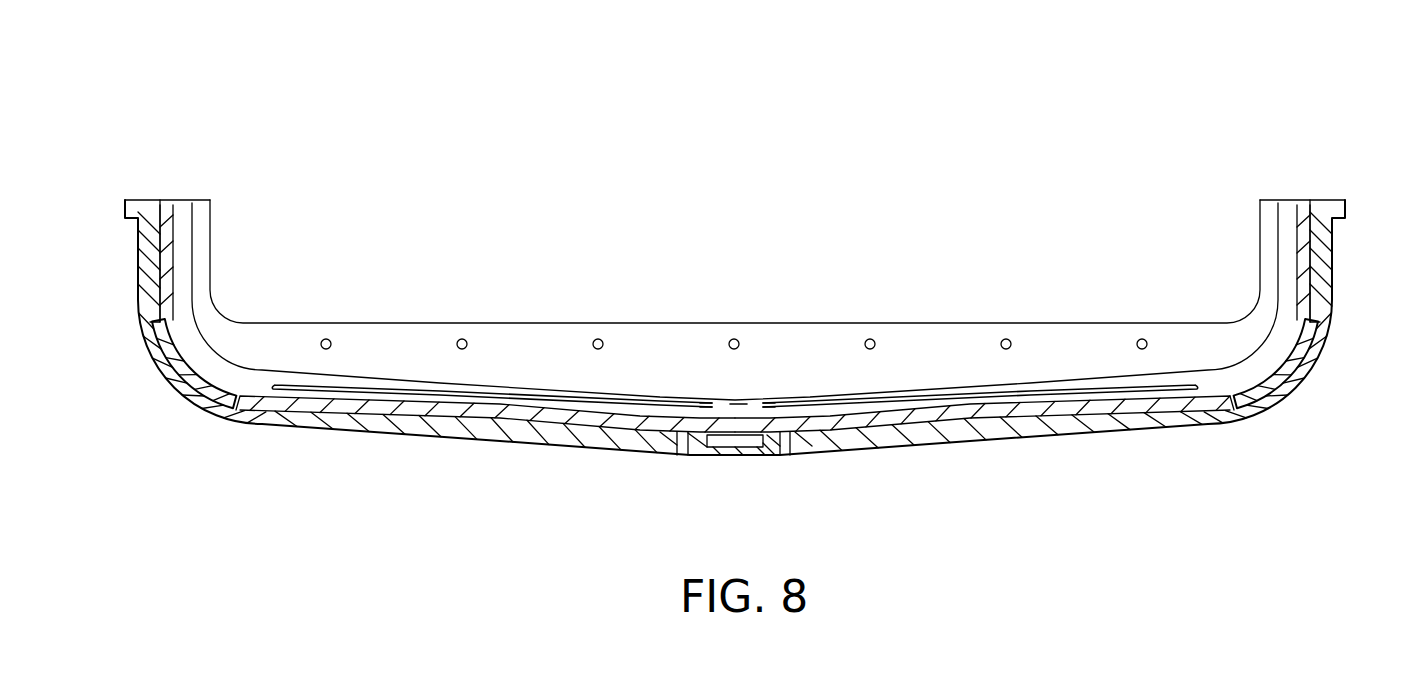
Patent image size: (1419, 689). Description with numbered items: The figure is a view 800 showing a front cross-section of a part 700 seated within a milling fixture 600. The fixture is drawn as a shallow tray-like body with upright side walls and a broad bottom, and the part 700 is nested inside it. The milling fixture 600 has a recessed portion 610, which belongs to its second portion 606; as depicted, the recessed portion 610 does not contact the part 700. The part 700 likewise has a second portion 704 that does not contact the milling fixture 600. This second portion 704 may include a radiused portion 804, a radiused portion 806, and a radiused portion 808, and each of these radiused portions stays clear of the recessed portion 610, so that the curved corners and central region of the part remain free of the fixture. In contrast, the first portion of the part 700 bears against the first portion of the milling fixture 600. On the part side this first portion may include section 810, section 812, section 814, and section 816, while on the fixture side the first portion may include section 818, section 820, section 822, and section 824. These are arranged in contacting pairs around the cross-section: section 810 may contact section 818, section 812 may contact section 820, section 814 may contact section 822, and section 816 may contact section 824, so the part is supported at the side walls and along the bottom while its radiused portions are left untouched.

The view 800 is at (304, 72).
The milling fixture 600 is at (132, 196).
The second portion 606 is at (712, 494).
The recessed portion 610 is at (1309, 374).
The part 700 is at (918, 402).
The second portion 704 is at (716, 407).
The radiused portion 804 is at (197, 354).
The radiused portion 806 is at (764, 407).
The radiused portion 808 is at (1272, 354).
The section 810 is at (177, 272).
The section 812 is at (346, 392).
The section 814 is at (1121, 392).
The section 816 is at (1293, 262).
The section 818 is at (136, 284).
The section 820 is at (395, 438).
The section 822 is at (1033, 438).
The section 824 is at (1334, 284).